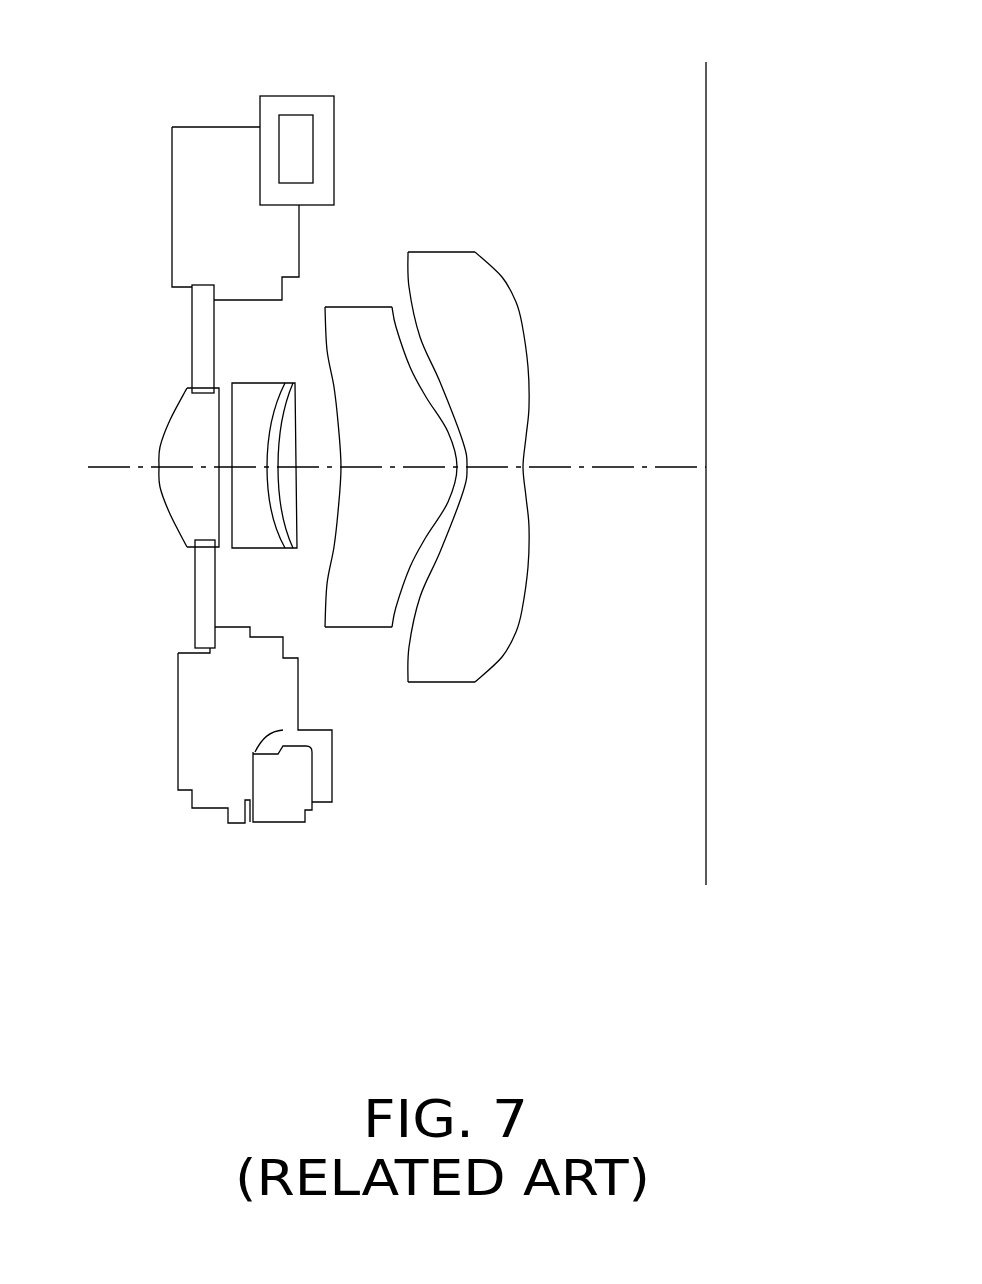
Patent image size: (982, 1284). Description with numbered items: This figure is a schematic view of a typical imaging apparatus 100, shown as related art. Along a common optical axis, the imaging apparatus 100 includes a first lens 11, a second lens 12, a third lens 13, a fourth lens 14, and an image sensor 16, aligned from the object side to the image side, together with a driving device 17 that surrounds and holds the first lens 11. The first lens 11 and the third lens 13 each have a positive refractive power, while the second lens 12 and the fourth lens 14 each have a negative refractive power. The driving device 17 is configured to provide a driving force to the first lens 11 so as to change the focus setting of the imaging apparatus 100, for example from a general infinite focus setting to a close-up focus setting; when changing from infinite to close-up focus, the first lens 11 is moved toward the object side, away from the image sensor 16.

The imaging apparatus 100 is at (221, 54).
The first lens 11 is at (183, 430).
The second lens 12 is at (262, 407).
The third lens 13 is at (365, 327).
The fourth lens 14 is at (458, 650).
The image sensor 16 is at (706, 288).
The driving device 17 is at (203, 182).